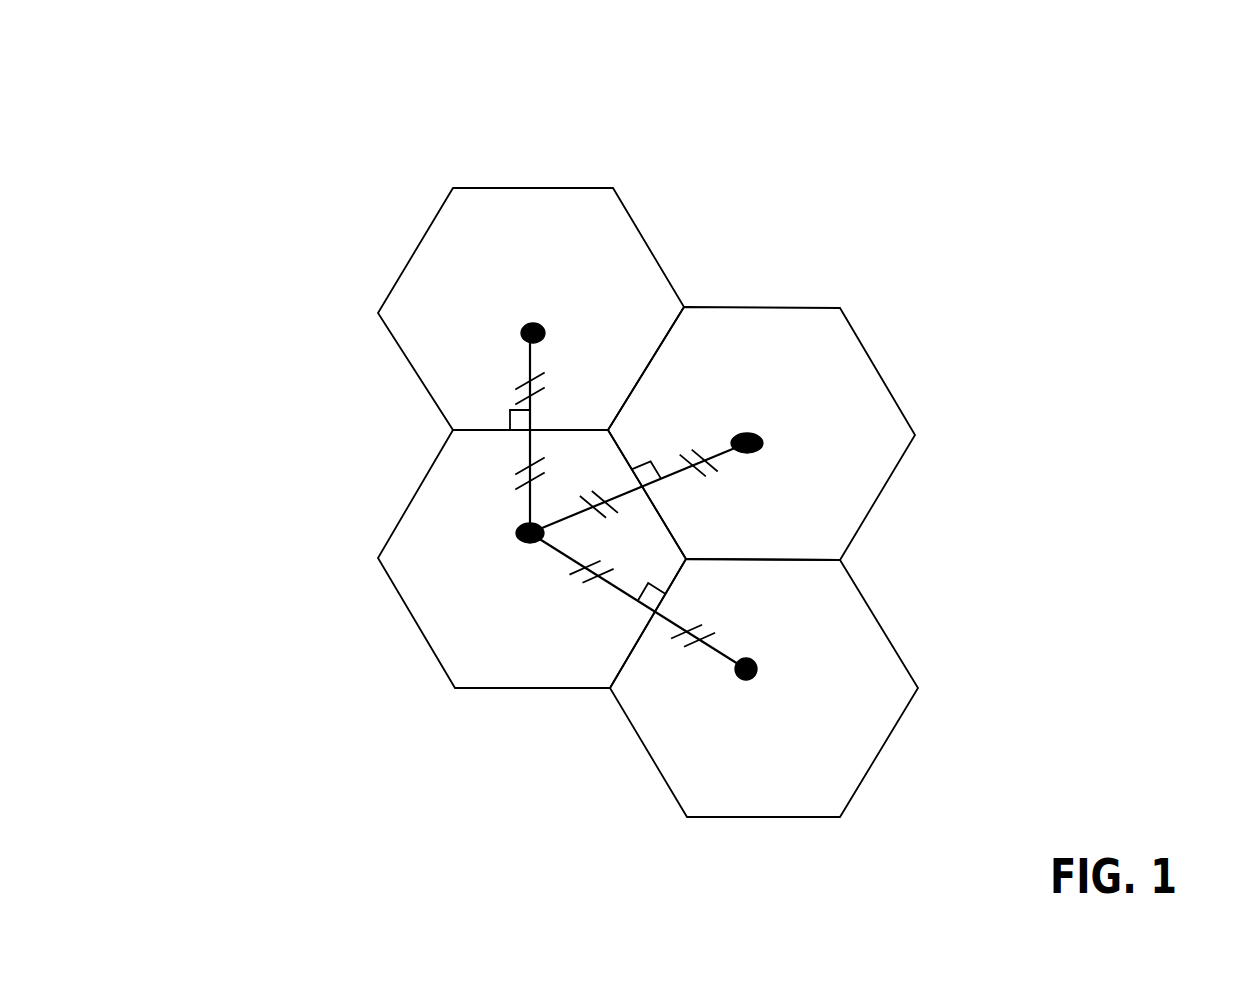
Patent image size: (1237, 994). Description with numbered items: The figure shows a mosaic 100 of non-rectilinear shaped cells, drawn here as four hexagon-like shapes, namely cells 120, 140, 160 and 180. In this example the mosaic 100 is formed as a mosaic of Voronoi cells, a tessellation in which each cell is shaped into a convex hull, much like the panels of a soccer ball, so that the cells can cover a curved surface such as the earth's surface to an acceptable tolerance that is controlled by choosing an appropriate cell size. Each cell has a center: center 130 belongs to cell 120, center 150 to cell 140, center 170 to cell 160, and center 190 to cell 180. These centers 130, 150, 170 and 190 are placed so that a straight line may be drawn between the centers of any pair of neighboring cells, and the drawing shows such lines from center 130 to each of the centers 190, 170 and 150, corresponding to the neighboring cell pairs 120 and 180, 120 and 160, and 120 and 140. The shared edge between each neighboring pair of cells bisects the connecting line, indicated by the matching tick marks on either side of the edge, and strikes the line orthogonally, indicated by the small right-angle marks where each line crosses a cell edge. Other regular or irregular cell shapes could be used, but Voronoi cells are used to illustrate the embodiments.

The mosaic 100 is at (1013, 108).
The cell 120 is at (403, 598).
The center 130 is at (513, 528).
The cell 140 is at (643, 738).
The center 150 is at (760, 666).
The cell 160 is at (882, 370).
The center 170 is at (782, 434).
The cell 180 is at (667, 272).
The center 190 is at (517, 325).